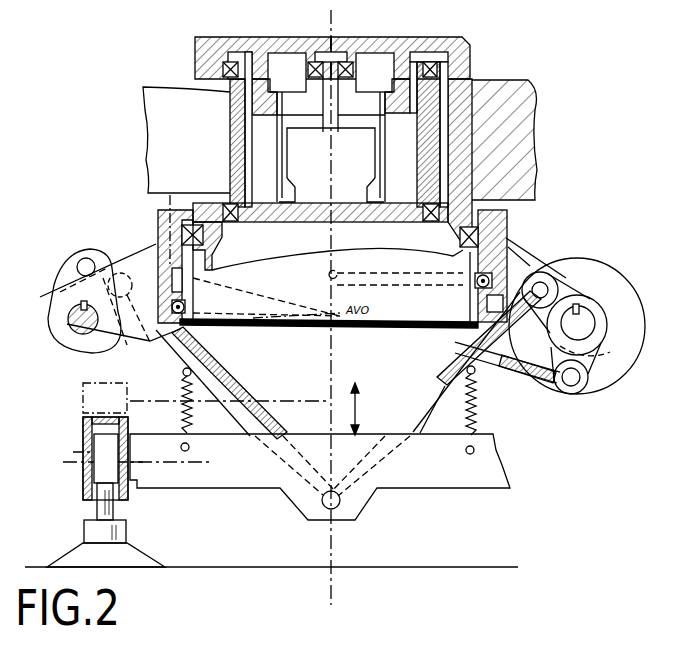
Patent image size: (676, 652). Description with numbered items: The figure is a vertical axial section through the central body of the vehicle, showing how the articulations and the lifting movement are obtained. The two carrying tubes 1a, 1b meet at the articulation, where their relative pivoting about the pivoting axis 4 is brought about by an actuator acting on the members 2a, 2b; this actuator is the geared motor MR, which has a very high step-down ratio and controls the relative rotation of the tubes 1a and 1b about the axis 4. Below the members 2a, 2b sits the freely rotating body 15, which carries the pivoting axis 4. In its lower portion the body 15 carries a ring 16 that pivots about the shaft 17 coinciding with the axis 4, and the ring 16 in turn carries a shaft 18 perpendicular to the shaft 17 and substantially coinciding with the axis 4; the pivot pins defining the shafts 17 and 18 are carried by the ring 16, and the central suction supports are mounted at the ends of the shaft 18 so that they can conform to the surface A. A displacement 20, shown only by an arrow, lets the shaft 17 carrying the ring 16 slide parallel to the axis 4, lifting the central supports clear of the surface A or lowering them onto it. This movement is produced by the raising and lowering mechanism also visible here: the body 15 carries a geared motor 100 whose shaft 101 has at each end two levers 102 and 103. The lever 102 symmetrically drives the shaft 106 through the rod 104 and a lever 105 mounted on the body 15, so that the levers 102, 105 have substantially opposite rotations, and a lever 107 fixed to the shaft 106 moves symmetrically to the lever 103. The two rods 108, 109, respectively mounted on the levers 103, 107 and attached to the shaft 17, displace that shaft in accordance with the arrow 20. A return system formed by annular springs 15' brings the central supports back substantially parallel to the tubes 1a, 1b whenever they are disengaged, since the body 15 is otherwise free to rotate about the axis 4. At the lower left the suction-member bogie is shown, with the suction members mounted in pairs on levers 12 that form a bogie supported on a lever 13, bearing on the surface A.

The carrying tube 1a is at (157, 110).
The carrying tube 1b is at (515, 118).
The member 2a is at (175, 93).
The member 2b is at (457, 63).
The geared motor MR is at (343, 180).
The freely rotating body 15 is at (297, 251).
The annular springs 15' is at (276, 256).
The rod 104 is at (372, 342).
The lever 105 is at (67, 268).
The shaft 106 is at (68, 321).
The lever 107 is at (177, 336).
The rod 108 is at (445, 360).
The rod 109 is at (232, 363).
The geared motor 100 is at (611, 263).
The shaft 101 is at (620, 370).
The lever 102 is at (576, 394).
The lever 103 is at (553, 268).
The displacement 20 is at (378, 412).
The ring 16 is at (238, 494).
The shaft 17 is at (341, 503).
The shaft 18 is at (143, 462).
The lever 13 is at (84, 421).
The lever 12 is at (102, 473).
The surface A is at (428, 566).
The pivoting axis 4 is at (336, 599).